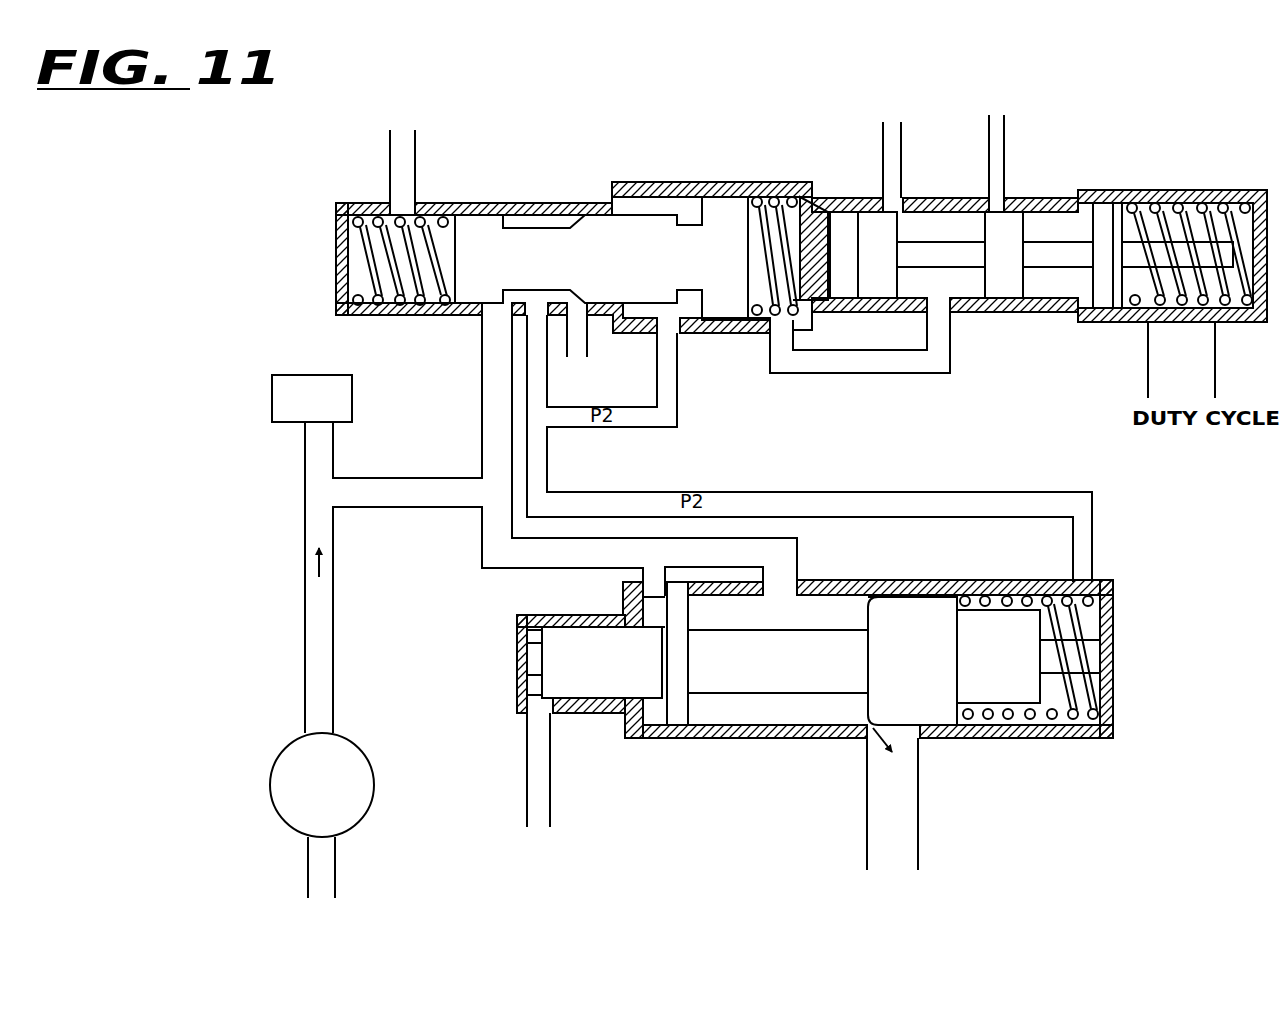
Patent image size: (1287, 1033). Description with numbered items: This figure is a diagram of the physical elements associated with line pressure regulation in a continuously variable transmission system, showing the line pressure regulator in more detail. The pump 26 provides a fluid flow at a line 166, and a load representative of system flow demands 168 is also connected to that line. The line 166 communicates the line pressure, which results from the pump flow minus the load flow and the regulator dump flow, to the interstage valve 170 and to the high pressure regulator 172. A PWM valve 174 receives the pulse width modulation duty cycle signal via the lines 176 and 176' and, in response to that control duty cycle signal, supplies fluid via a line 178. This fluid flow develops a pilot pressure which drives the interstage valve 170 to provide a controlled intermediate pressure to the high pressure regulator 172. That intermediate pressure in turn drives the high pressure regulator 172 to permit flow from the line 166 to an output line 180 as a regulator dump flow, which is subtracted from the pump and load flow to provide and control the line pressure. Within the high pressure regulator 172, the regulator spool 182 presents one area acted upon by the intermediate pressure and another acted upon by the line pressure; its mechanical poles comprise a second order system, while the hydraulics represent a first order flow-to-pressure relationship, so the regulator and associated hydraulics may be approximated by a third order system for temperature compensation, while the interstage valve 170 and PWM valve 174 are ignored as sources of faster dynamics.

The pump 26 is at (365, 748).
The line 166 is at (430, 510).
The load representative of system flow demands 168 is at (352, 398).
The interstage valve 170 is at (742, 175).
The high pressure regulator 172 is at (773, 731).
The PWM valve 174 is at (1236, 185).
The line 176 is at (1115, 389).
The line 176' is at (1185, 360).
The line 178 is at (943, 375).
The output line 180 is at (918, 802).
The regulator spool 182 is at (777, 671).